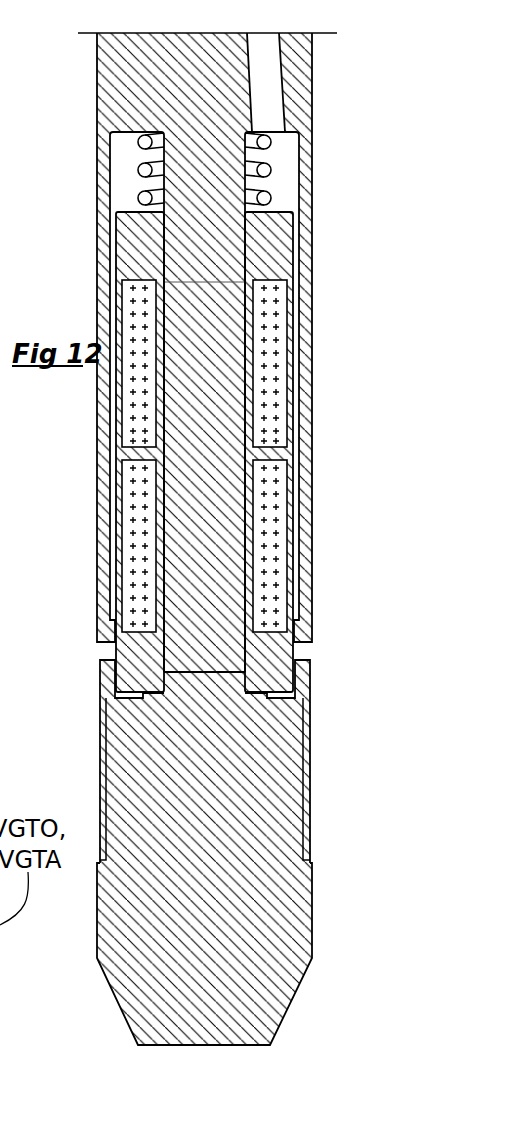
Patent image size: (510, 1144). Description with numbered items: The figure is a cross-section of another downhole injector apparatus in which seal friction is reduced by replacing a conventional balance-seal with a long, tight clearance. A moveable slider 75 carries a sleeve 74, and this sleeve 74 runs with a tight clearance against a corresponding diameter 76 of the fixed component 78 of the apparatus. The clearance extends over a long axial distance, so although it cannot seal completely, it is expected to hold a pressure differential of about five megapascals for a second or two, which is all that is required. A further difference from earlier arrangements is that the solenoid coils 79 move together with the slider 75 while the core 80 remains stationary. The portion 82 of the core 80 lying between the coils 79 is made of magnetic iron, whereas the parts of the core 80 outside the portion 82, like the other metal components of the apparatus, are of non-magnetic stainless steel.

The core 80 is at (176, 72).
The moveable slider 75 is at (290, 250).
The solenoid coils 79 is at (272, 529).
The portion of the core between the coils 82 is at (202, 515).
The sleeve 74 is at (310, 743).
The corresponding diameter 76 is at (305, 823).
The fixed component 78 is at (277, 918).